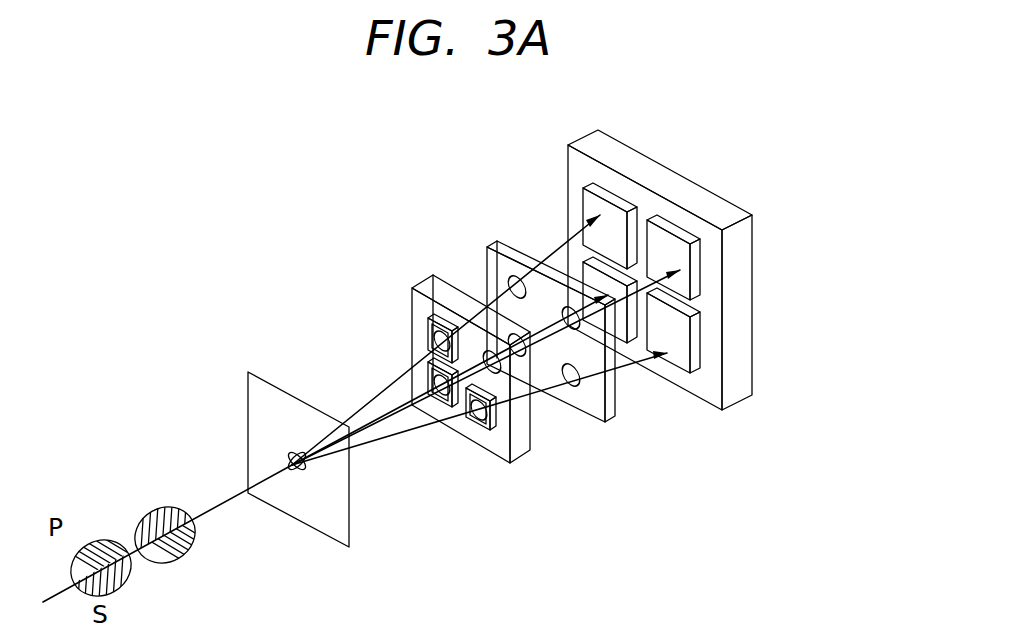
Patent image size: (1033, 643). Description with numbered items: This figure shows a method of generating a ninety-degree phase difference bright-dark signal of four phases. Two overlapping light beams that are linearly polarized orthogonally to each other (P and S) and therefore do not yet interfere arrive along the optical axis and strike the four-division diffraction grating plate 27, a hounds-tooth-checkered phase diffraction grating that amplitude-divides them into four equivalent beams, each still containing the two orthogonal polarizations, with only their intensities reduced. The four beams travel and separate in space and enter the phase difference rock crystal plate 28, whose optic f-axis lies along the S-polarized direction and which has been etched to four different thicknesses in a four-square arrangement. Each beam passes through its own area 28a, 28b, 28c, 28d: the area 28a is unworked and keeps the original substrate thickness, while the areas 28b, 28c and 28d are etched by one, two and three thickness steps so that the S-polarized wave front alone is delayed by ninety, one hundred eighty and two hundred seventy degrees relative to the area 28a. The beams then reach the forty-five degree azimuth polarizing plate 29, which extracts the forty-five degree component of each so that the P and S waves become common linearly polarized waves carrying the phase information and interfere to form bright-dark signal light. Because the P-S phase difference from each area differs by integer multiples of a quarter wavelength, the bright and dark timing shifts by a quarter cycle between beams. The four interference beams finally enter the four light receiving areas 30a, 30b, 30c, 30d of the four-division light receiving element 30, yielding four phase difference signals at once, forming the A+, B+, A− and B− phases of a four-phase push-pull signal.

The four-division diffraction grating plate 27 is at (265, 410).
The phase difference rock crystal plate 28 is at (465, 366).
The area 28a is at (505, 375).
The area 28b is at (433, 337).
The area 28c is at (438, 398).
The area 28d is at (482, 417).
The 45° azimuth polarizing plate 29 is at (488, 260).
The four-division light receiving element 30 is at (680, 240).
The light receiving area 30a is at (678, 347).
The light receiving area 30b is at (683, 278).
The light receiving area 30c is at (611, 212).
The light receiving area 30d is at (593, 283).